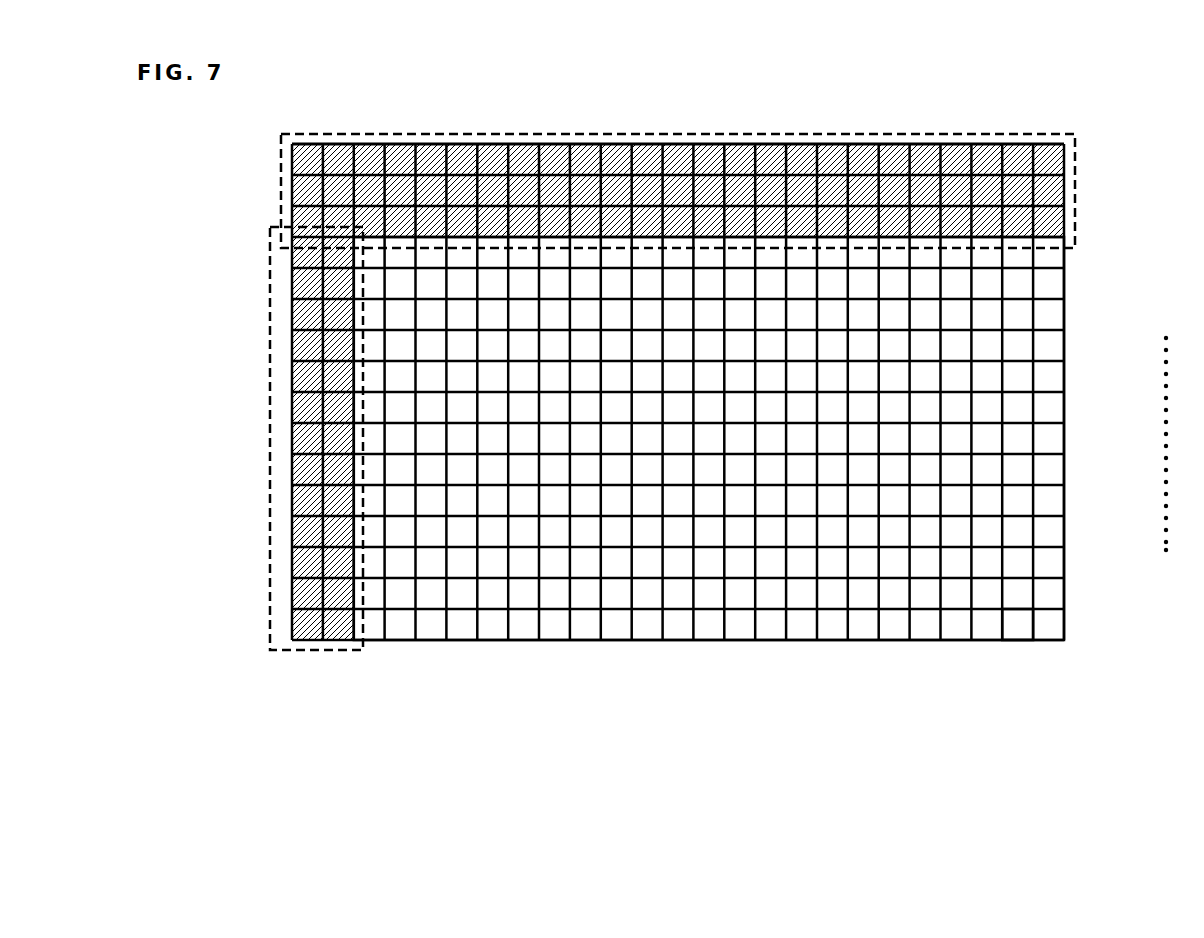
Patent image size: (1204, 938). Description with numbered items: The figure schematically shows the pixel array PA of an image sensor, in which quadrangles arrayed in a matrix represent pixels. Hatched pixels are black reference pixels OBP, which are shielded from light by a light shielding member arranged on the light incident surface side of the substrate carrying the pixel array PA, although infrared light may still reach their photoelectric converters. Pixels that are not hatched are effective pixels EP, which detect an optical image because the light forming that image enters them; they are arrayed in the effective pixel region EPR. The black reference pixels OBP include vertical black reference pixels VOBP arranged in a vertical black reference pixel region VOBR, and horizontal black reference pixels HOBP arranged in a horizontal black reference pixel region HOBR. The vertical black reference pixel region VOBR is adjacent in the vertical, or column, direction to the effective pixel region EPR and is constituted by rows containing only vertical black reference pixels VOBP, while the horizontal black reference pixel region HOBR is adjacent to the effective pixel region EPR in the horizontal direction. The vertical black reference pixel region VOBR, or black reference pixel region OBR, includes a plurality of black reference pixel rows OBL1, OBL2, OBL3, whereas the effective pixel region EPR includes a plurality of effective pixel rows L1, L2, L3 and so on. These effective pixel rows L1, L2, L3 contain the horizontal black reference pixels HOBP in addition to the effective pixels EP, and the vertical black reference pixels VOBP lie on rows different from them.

The vertical black reference pixel region VOBR is at (492, 133).
The vertical black reference pixel VOBP is at (987, 160).
The horizontal black reference pixel region HOBR is at (268, 332).
The horizontal black reference pixel HOBP is at (300, 472).
The black reference pixel row OBL1 is at (1090, 157).
The black reference pixel row OBL2 is at (1090, 189).
The black reference pixel row OBL3 is at (1090, 219).
The effective pixel row L1 is at (1090, 250).
The effective pixel row L2 is at (1090, 282).
The effective pixel row L3 is at (1090, 313).
The effective pixel EP is at (1013, 630).
The pixel array PA is at (807, 736).
The effective pixel region EPR is at (1045, 738).
The black reference pixel region OBR is at (473, 740).
The black reference pixel OBP is at (473, 830).